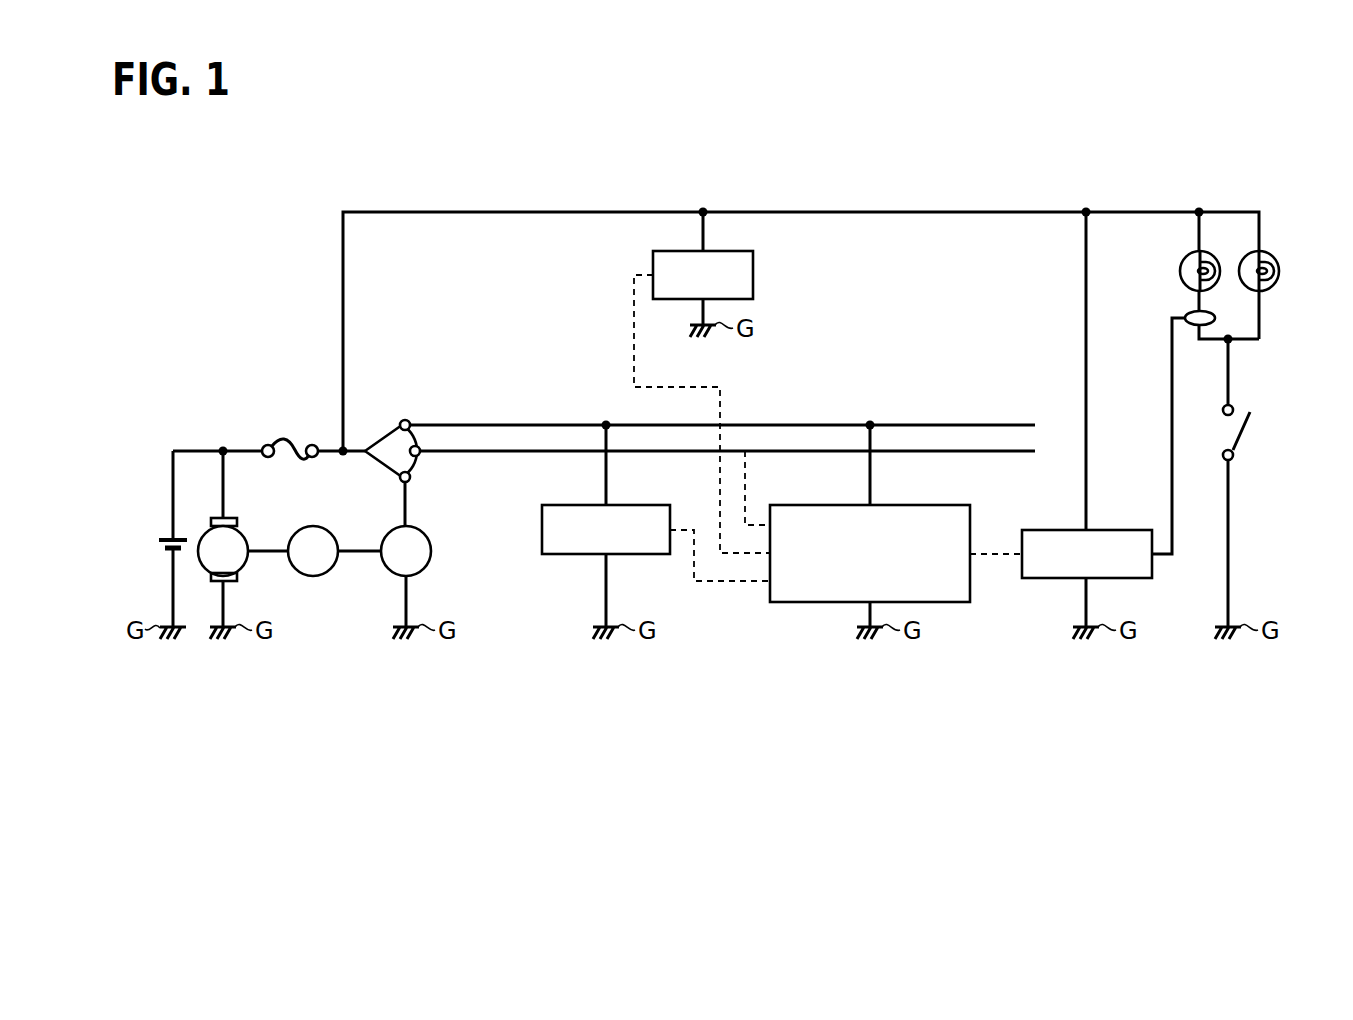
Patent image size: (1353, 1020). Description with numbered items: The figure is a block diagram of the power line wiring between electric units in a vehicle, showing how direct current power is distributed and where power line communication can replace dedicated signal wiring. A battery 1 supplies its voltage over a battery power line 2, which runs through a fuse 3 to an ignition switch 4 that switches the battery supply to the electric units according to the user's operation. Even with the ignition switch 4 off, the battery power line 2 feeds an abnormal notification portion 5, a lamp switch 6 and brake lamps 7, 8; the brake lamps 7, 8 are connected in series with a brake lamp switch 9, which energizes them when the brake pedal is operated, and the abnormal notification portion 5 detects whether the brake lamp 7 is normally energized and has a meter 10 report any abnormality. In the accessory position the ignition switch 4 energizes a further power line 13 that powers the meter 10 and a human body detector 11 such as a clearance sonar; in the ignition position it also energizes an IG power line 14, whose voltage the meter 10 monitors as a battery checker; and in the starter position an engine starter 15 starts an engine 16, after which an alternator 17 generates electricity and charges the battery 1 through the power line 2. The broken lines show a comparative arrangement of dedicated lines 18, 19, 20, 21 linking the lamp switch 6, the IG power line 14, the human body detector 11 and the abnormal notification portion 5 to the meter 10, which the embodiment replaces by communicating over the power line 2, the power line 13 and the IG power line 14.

The battery 1 is at (158, 543).
The battery power line 2 is at (198, 449).
The fuse 3 is at (290, 440).
The ignition switch 4 is at (386, 437).
The abnormal notification portion 5 is at (1057, 530).
The lamp switch 6 is at (753, 272).
The brake lamp 7 is at (1180, 271).
The brake lamp 8 is at (1280, 271).
The brake lamp switch 9 is at (1247, 438).
The meter 10 is at (770, 597).
The human body detector 11 is at (542, 530).
The power line 13 is at (495, 422).
The IG power line 14 is at (495, 453).
The engine starter 15 is at (427, 565).
The engine 16 is at (333, 565).
The alternator 17 is at (243, 562).
The dedicated line 18 is at (722, 397).
The dedicated line 19 is at (748, 472).
The dedicated line 20 is at (692, 570).
The dedicated line 21 is at (996, 560).